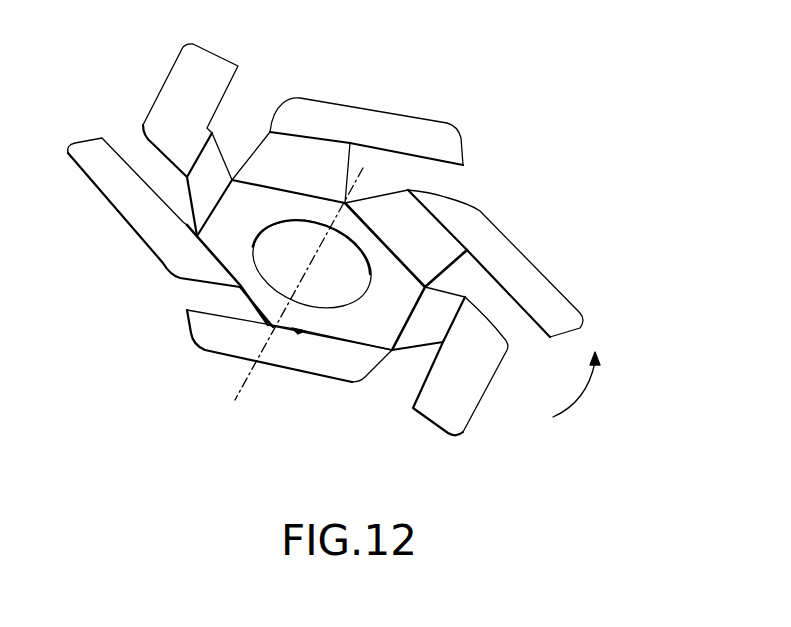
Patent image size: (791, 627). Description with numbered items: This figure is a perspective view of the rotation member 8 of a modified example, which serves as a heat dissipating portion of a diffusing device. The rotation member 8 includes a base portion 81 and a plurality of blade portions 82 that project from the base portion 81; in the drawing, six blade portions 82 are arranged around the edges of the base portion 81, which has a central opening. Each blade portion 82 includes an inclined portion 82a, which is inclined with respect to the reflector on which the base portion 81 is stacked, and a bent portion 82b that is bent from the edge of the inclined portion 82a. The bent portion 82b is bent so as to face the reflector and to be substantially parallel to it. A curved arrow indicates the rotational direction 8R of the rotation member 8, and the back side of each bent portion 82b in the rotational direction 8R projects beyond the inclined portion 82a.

The rotation member 8 is at (372, 250).
The base portion 81 is at (388, 323).
The blade portion 82 is at (372, 239).
The inclined portion 82a is at (417, 232).
The bent portion 82b is at (505, 262).
The rotational direction 8R is at (588, 389).